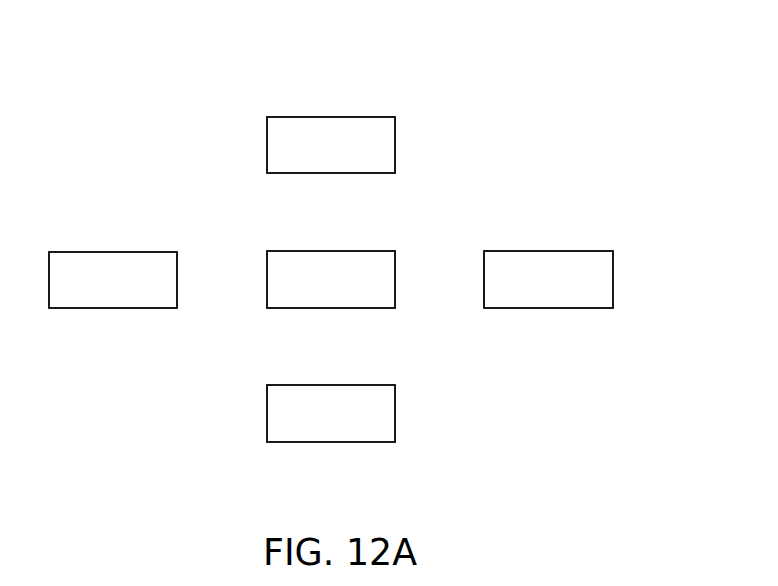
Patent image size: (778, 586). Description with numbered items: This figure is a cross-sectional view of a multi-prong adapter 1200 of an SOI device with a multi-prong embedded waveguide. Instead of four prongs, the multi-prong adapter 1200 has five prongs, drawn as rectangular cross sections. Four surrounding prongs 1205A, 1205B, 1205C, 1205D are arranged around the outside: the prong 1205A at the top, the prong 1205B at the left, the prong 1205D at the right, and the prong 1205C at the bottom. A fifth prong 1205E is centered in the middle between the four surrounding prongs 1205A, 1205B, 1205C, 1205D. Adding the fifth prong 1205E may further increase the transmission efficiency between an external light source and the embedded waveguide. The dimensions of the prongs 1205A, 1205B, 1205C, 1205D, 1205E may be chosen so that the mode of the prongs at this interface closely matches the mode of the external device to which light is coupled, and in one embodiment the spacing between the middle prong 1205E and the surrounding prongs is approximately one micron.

The multi-prong adapter 1200 is at (492, 78).
The prong 1205A is at (343, 117).
The prong 1205B is at (126, 252).
The prong 1205C is at (343, 385).
The prong 1205D is at (561, 251).
The fifth prong 1205E is at (343, 251).